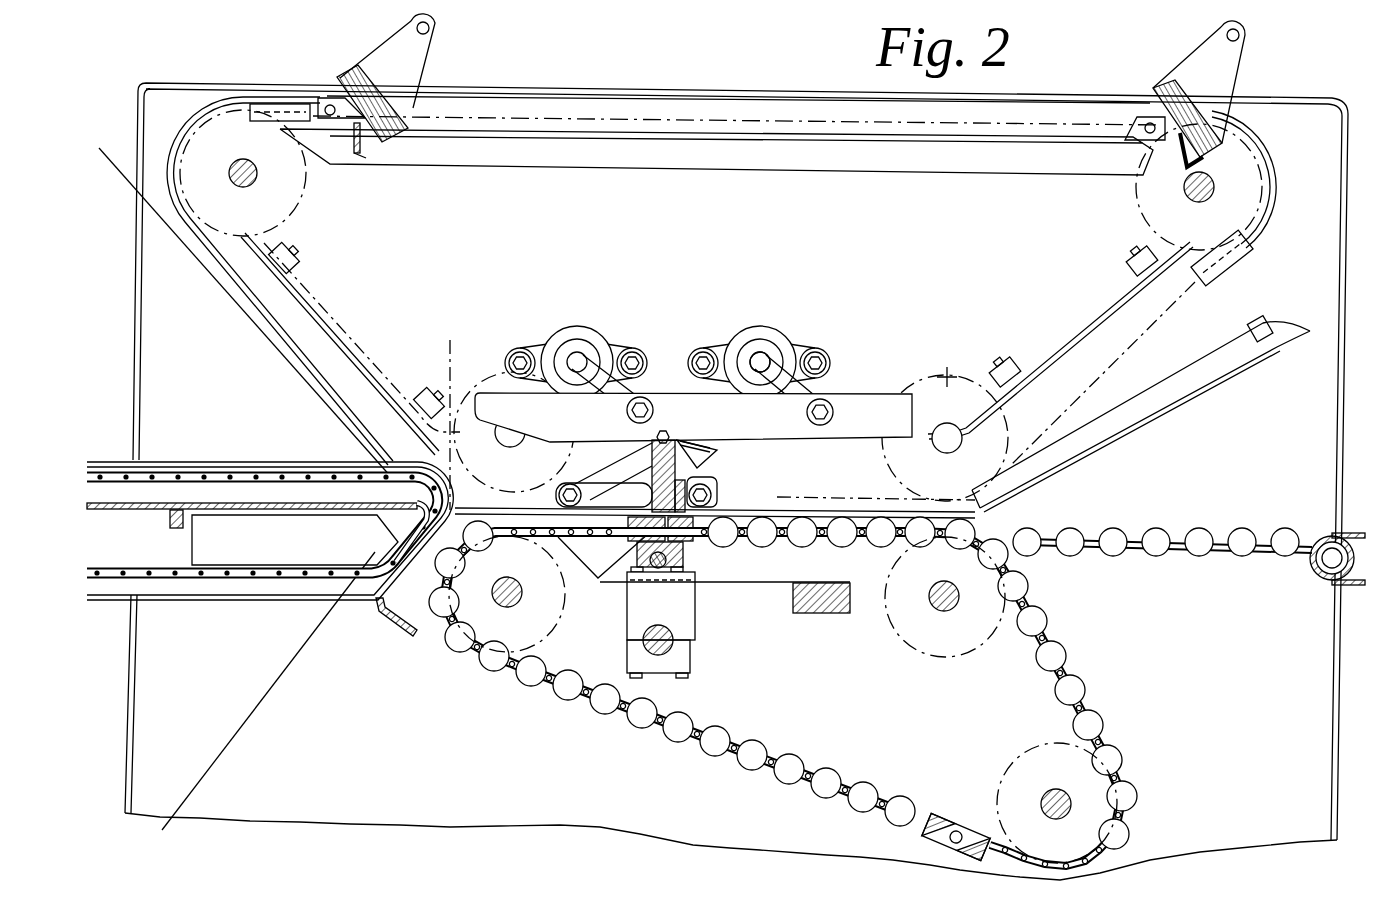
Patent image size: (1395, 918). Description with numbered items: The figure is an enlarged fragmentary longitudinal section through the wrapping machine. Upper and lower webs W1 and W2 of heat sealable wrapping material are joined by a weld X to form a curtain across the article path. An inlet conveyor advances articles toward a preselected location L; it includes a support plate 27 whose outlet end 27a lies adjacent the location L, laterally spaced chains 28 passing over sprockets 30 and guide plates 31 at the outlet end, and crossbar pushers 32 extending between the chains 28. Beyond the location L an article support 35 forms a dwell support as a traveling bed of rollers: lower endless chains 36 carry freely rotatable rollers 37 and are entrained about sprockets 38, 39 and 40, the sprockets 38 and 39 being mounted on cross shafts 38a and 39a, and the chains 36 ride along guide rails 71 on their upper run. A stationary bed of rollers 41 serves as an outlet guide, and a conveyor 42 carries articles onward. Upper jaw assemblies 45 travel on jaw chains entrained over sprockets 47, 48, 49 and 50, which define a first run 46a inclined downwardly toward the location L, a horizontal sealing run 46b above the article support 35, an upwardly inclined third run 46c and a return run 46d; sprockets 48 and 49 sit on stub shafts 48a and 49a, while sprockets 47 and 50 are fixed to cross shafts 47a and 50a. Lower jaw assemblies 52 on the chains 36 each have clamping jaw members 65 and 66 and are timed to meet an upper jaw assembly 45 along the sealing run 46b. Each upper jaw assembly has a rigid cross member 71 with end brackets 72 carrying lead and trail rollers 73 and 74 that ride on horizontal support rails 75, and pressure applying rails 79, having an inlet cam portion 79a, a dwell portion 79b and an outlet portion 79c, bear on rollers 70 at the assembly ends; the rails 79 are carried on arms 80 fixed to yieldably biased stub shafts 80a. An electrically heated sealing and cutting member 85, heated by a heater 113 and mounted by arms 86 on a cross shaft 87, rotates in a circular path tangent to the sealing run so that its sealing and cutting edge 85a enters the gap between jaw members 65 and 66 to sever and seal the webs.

The support plate 27 is at (228, 503).
The outlet end of the support plate 27a is at (410, 518).
The chains 28 is at (157, 477).
The sprockets 30 is at (400, 497).
The guide plates 31 is at (372, 555).
The crossbars 32 is at (130, 477).
The article support means 35 is at (438, 650).
The lower endless chains 36 is at (607, 533).
The rollers 37 is at (1036, 619).
The sprocket 38 is at (537, 623).
The cross shaft 38a is at (515, 580).
The sprocket 39 is at (962, 642).
The cross shaft 39a is at (932, 602).
The sprocket 40 is at (1030, 773).
The outlet guide 41 is at (1119, 533).
The conveyor 42 is at (1348, 536).
The upper jaw assemblies 45 is at (437, 70).
The first run 46a is at (327, 342).
The sealing run 46b is at (787, 493).
The third run 46c is at (1152, 328).
The return run 46d is at (711, 117).
The sprocket 47 is at (308, 201).
The cross shaft 47a is at (233, 160).
The sprocket 48 is at (483, 372).
The stub shaft 48a is at (512, 445).
The sprocket 49 is at (942, 396).
The stub shaft 49a is at (949, 452).
The sprocket 50 is at (1134, 206).
The cross shaft 50a is at (1192, 201).
The lower jaw assemblies 52 is at (698, 552).
The clamping jaw member 65 is at (688, 517).
The clamping jaw member 66 is at (640, 517).
The rollers 70 is at (674, 440).
The cross member 71 is at (652, 462).
The brackets 72 is at (622, 457).
The lead guide roller 73 is at (703, 490).
The trail guide roller 74 is at (550, 487).
The support rails 75 is at (875, 499).
The pressure applying rails 79 is at (688, 400).
The inlet cam portion 79a is at (490, 427).
The dwell portion 79b is at (730, 443).
The outlet portion 79c is at (847, 440).
The arms 80 is at (796, 384).
The stub shafts 80a is at (762, 358).
The sealing and cutting member 85 is at (679, 549).
The sealing and cutting edge 85a is at (603, 569).
The arms 86 is at (683, 605).
The cross shaft 87 is at (670, 650).
The heater 113 is at (660, 573).
The upper web W1 is at (258, 332).
The lower web W2 is at (275, 696).
The joint X is at (330, 394).
The location L is at (461, 482).